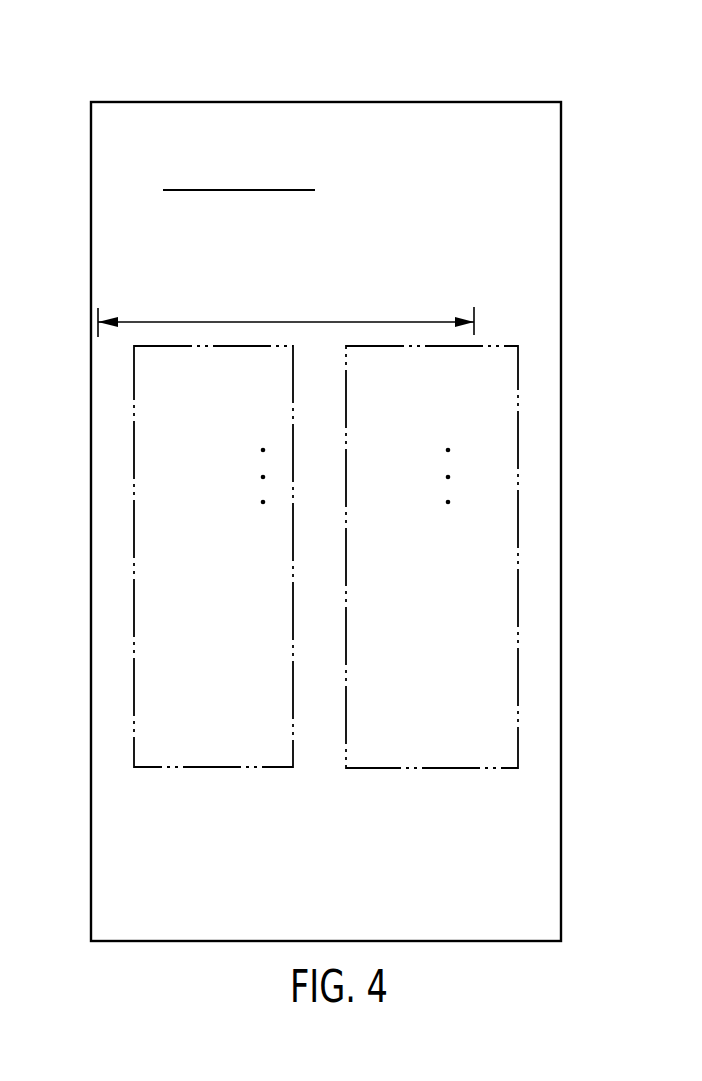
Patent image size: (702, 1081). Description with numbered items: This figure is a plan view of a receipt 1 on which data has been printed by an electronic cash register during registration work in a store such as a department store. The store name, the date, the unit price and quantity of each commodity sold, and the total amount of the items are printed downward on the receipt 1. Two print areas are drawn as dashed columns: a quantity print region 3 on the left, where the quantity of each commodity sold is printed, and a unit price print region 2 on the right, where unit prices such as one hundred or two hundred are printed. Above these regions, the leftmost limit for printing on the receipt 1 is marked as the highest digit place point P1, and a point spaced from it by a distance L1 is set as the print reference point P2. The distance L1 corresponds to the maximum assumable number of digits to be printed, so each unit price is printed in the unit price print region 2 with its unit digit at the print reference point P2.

The receipt 1 is at (432, 68).
The unit price print region 2 is at (518, 735).
The quantity print region 3 is at (134, 730).
The distance L1 is at (298, 322).
The highest digit place point P1 is at (97, 318).
The print reference point P2 is at (476, 312).